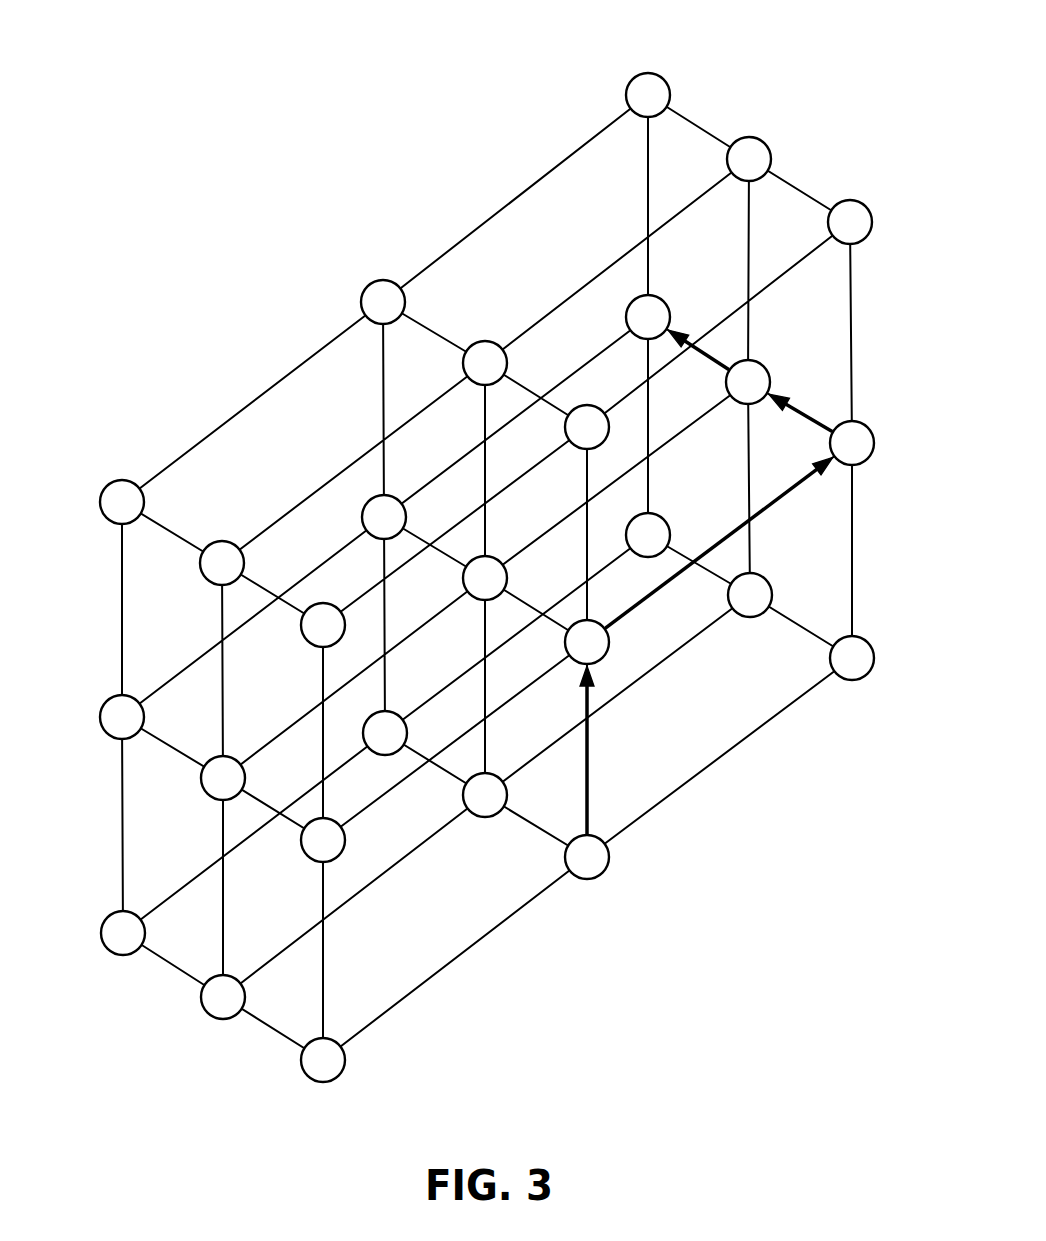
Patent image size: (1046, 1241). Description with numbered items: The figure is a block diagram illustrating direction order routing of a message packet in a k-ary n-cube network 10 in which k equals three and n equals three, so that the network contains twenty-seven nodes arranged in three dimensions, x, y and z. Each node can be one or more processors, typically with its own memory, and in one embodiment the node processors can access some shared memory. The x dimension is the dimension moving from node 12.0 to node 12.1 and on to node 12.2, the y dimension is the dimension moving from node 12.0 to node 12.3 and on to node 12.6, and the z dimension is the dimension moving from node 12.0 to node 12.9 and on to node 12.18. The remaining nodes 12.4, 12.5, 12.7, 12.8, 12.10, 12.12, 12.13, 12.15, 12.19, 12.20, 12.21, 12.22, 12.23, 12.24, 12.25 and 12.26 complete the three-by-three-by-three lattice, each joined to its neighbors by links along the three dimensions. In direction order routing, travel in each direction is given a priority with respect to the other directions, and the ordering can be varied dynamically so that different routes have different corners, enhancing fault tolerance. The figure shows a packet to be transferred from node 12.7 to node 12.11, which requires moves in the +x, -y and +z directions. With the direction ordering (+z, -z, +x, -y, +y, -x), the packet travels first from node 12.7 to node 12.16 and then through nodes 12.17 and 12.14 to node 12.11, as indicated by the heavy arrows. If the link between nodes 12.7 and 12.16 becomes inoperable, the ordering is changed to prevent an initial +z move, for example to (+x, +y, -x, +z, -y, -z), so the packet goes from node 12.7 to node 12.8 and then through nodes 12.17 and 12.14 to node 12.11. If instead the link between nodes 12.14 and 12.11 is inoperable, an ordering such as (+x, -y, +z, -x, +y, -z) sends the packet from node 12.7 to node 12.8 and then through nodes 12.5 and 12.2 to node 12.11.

The k-ary n-cube network 10 is at (310, 149).
The node 12.0 is at (107, 949).
The node 12.1 is at (393, 712).
The node 12.2 is at (660, 514).
The node 12.3 is at (207, 1013).
The node 12.4 is at (493, 774).
The node 12.5 is at (765, 575).
The node 12.6 is at (308, 1077).
The node 12.7 is at (594, 835).
The node 12.8 is at (865, 637).
The node 12.9 is at (106, 733).
The node 12.10 is at (393, 496).
The node 12.11 is at (658, 296).
The node 12.12 is at (207, 795).
The node 12.13 is at (493, 557).
The node 12.14 is at (765, 362).
The node 12.15 is at (304, 857).
The node 12.16 is at (610, 637).
The node 12.17 is at (862, 422).
The node 12.18 is at (122, 479).
The node 12.19 is at (390, 280).
The node 12.20 is at (653, 72).
The node 12.21 is at (223, 540).
The node 12.22 is at (494, 342).
The node 12.23 is at (758, 137).
The node 12.24 is at (330, 603).
The node 12.25 is at (592, 405).
The node 12.26 is at (858, 200).